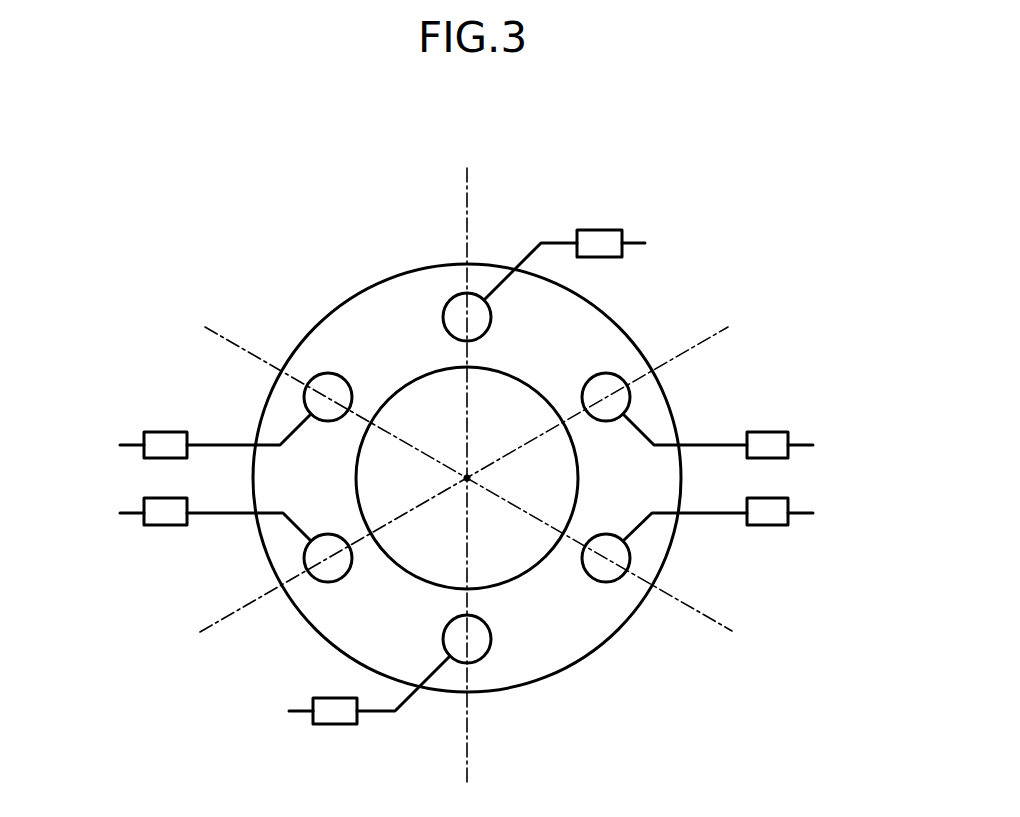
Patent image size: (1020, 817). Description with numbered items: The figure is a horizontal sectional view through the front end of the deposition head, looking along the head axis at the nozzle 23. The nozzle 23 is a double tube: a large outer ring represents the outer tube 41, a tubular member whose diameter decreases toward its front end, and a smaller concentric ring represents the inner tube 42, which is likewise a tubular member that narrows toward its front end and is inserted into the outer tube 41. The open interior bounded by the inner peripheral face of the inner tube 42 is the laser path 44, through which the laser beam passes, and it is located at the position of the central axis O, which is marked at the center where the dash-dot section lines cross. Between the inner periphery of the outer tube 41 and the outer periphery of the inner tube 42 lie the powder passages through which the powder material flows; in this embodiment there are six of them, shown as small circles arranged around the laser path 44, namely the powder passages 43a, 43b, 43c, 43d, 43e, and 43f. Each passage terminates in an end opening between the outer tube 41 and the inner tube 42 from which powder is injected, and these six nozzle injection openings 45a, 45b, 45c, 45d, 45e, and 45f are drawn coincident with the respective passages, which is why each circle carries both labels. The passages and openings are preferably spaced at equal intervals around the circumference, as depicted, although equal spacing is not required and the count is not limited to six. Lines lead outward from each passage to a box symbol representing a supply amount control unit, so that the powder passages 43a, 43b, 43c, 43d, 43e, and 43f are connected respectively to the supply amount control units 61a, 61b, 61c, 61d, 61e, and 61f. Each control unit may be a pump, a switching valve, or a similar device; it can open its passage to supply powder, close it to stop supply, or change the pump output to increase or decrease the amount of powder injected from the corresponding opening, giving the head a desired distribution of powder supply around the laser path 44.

The nozzle 23 is at (474, 434).
The outer tube 41 is at (670, 557).
The inner tube 42 is at (413, 380).
The powder passage 43a is at (415, 249).
The powder passage 43b is at (675, 349).
The powder passage 43c is at (650, 603).
The powder passage 43d is at (517, 685).
The powder passage 43e is at (282, 605).
The powder passage 43f is at (294, 342).
The nozzle injection opening 45a is at (457, 310).
The nozzle injection opening 45b is at (598, 388).
The nozzle injection opening 45c is at (602, 568).
The nozzle injection opening 45d is at (474, 644).
The nozzle injection opening 45e is at (330, 566).
The nozzle injection opening 45f is at (330, 390).
The laser path 44 is at (382, 485).
The central axis O is at (470, 482).
The supply amount control unit 61a is at (619, 208).
The supply amount control unit 61b is at (786, 410).
The supply amount control unit 61c is at (786, 476).
The supply amount control unit 61d is at (338, 724).
The supply amount control unit 61e is at (166, 476).
The supply amount control unit 61f is at (166, 410).